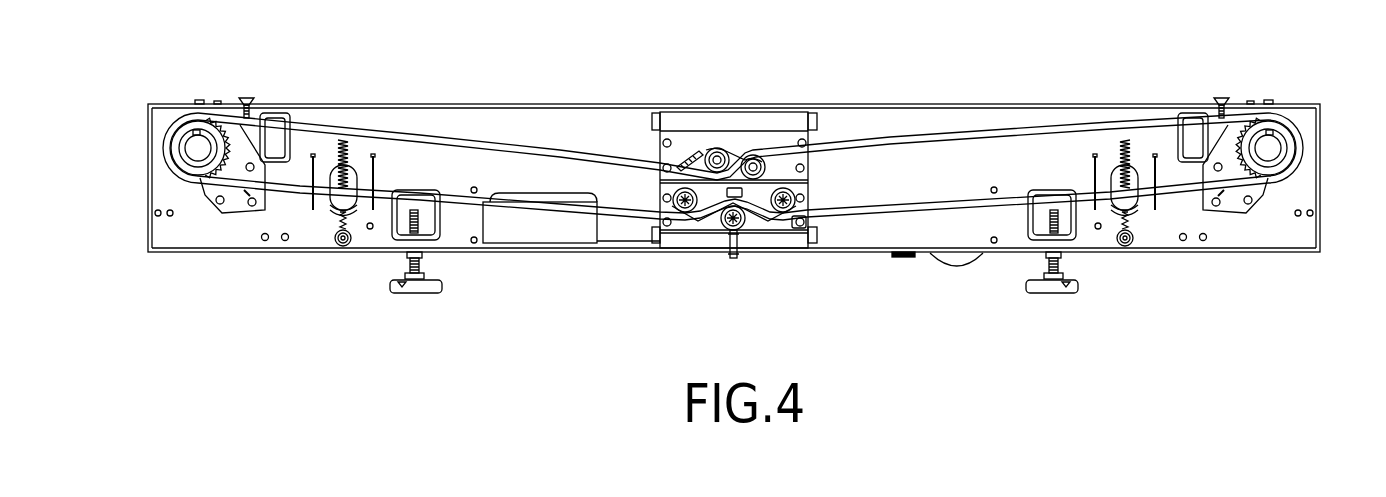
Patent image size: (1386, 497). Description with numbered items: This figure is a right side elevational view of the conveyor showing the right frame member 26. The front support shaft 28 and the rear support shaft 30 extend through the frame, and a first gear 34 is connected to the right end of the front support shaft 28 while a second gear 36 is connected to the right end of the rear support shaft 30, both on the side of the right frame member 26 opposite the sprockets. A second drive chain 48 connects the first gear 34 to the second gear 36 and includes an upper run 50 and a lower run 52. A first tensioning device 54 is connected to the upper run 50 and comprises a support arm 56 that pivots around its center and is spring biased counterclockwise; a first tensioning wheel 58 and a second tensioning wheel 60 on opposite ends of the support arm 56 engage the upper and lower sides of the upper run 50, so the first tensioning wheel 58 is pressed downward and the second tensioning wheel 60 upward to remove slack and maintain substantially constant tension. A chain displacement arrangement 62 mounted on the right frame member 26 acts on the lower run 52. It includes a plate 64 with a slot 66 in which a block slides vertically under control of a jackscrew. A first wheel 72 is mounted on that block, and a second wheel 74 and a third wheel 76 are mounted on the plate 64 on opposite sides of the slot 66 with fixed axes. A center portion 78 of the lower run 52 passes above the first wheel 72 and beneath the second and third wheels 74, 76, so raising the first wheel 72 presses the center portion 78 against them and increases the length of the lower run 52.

The right frame member 26 is at (870, 125).
The front support shaft 28 is at (1272, 150).
The rear support shaft 30 is at (193, 148).
The first gear 34 is at (1233, 130).
The second gear 36 is at (237, 143).
The second drive chain 48 is at (565, 146).
The upper run 50 is at (490, 145).
The lower run 52 is at (520, 202).
The first tensioning device 54 is at (748, 136).
The support arm 56 is at (728, 150).
The first tensioning wheel 58 is at (712, 150).
The second tensioning wheel 60 is at (763, 160).
The chain displacement arrangement 62 is at (670, 238).
The plate 64 is at (780, 225).
The slot 66 is at (742, 192).
The first wheel 72 is at (723, 223).
The second wheel 74 is at (667, 202).
The third wheel 76 is at (807, 197).
The center portion 78 is at (703, 223).